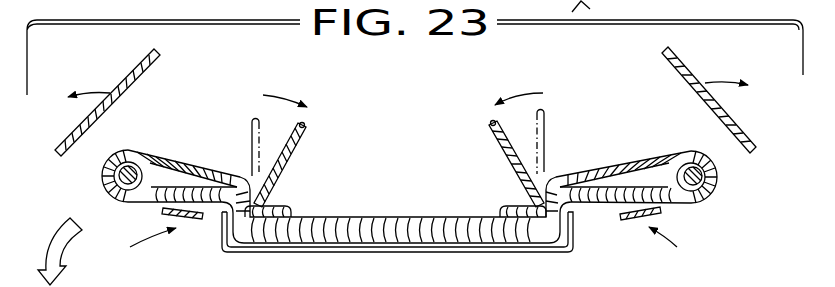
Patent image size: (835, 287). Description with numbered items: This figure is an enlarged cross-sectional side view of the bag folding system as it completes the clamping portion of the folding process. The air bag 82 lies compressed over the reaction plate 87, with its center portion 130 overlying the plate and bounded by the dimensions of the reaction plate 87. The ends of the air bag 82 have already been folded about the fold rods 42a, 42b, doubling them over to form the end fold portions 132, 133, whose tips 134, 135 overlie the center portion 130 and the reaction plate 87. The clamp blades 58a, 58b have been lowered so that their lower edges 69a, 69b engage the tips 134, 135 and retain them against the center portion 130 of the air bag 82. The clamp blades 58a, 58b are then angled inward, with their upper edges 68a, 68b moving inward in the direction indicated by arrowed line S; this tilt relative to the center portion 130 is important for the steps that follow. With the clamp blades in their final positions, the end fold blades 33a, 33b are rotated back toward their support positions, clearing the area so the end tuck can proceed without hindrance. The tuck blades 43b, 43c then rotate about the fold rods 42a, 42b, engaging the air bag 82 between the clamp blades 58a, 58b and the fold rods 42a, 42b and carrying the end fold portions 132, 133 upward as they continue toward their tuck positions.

The end fold blade 33a is at (118, 91).
The end fold blade 33b is at (742, 128).
The fold rod 42a is at (106, 180).
The fold rod 42b is at (718, 175).
The tuck blade 43b is at (664, 213).
The tuck blade 43c is at (193, 221).
The clamp blade 58a is at (288, 157).
The clamp blade 58b is at (509, 156).
The upper edge 68a is at (305, 126).
The upper edge 68b is at (490, 125).
The lower edge 69a is at (267, 204).
The lower edge 69b is at (533, 203).
The air bag 82 is at (310, 236).
The reaction plate 87 is at (262, 251).
The center portion 130 is at (392, 218).
The end fold portion 132 is at (192, 157).
The end fold portion 133 is at (631, 157).
The tip 134 is at (292, 211).
The tip 135 is at (497, 210).
The arrowed line S is at (284, 96).